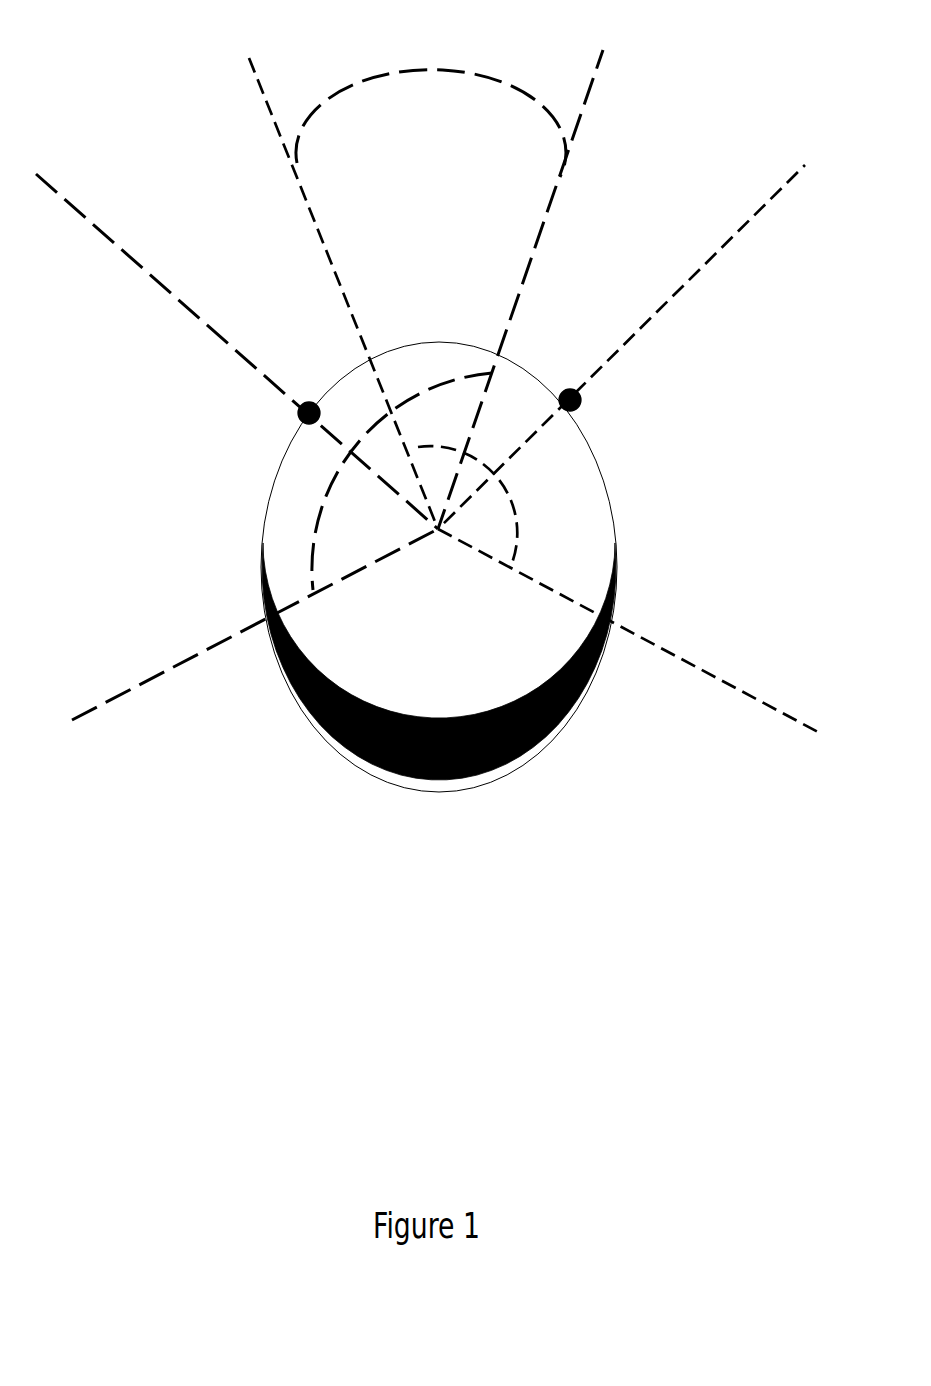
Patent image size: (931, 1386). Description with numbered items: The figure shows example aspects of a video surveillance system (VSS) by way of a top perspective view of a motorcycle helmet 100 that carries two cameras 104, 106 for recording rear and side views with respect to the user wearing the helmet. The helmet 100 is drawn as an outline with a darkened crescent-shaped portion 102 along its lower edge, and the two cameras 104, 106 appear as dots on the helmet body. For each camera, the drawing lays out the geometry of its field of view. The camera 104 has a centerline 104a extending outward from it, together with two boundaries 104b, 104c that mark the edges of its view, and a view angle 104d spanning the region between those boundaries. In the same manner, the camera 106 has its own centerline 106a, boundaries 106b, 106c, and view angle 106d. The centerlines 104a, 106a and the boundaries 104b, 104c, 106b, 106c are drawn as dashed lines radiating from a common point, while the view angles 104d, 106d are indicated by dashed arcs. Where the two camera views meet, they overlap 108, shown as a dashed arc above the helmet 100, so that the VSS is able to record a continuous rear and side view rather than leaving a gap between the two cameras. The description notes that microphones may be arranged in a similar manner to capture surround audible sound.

The motorcycle helmet 100 is at (455, 647).
The weighted base portion 102 is at (563, 718).
The camera 104 is at (303, 417).
The centerline 104a is at (113, 248).
The boundary 104b is at (180, 660).
The boundary 104c is at (580, 123).
The view angle 104d is at (322, 521).
The camera 106 is at (577, 413).
The centerline 106a is at (767, 208).
The boundary 106b is at (667, 648).
The boundary 106c is at (260, 92).
The view angle 106d is at (513, 530).
The overlap 108 is at (453, 65).